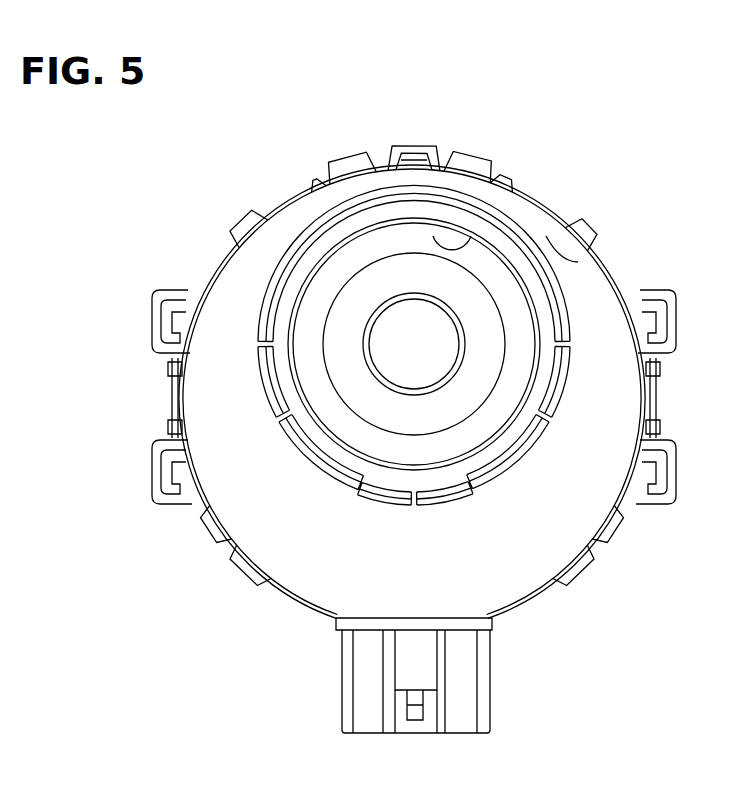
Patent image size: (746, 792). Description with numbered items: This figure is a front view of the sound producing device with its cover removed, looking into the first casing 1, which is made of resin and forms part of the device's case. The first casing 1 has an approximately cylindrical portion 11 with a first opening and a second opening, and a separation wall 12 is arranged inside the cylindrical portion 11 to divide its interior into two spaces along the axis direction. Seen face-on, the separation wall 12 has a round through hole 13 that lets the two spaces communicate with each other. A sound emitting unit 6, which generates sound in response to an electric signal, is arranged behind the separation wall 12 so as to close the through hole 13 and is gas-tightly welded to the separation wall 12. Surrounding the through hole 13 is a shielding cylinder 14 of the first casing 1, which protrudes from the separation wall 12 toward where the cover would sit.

The first casing 1 is at (271, 200).
The sound emitting unit 6 is at (308, 357).
The cylindrical portion 11 is at (222, 256).
The separation wall 12 is at (578, 268).
The through hole 13 is at (478, 230).
The shielding cylinder 14 is at (581, 220).